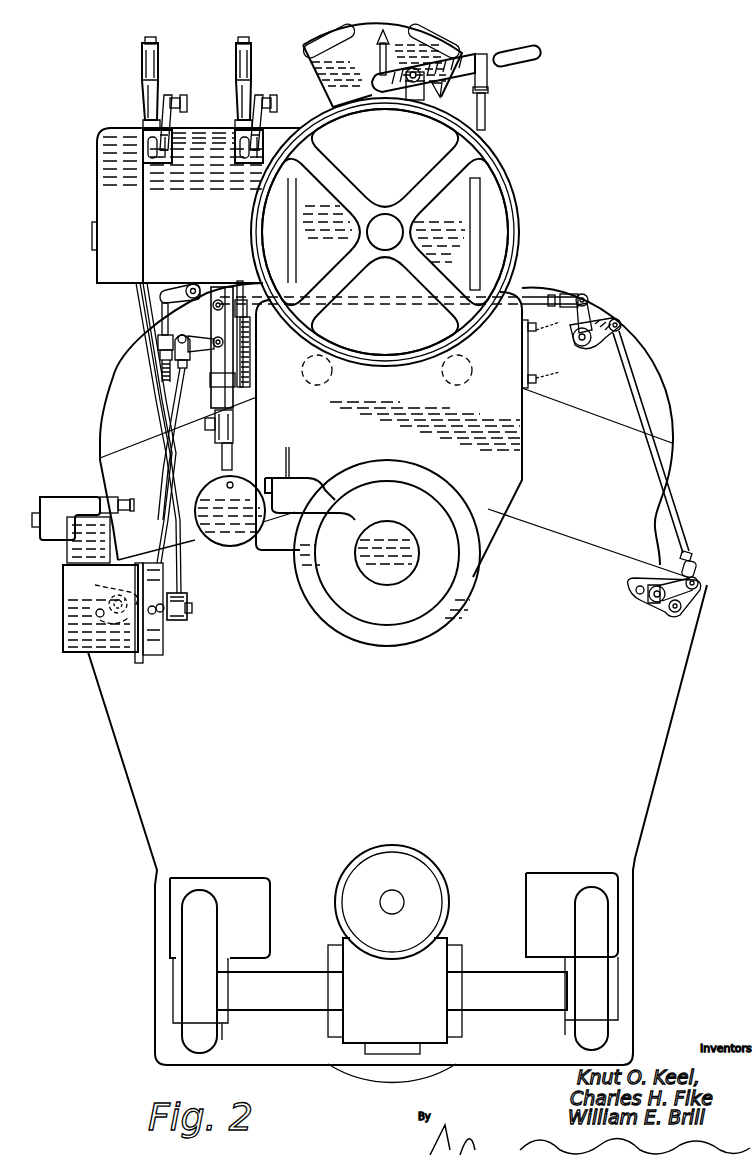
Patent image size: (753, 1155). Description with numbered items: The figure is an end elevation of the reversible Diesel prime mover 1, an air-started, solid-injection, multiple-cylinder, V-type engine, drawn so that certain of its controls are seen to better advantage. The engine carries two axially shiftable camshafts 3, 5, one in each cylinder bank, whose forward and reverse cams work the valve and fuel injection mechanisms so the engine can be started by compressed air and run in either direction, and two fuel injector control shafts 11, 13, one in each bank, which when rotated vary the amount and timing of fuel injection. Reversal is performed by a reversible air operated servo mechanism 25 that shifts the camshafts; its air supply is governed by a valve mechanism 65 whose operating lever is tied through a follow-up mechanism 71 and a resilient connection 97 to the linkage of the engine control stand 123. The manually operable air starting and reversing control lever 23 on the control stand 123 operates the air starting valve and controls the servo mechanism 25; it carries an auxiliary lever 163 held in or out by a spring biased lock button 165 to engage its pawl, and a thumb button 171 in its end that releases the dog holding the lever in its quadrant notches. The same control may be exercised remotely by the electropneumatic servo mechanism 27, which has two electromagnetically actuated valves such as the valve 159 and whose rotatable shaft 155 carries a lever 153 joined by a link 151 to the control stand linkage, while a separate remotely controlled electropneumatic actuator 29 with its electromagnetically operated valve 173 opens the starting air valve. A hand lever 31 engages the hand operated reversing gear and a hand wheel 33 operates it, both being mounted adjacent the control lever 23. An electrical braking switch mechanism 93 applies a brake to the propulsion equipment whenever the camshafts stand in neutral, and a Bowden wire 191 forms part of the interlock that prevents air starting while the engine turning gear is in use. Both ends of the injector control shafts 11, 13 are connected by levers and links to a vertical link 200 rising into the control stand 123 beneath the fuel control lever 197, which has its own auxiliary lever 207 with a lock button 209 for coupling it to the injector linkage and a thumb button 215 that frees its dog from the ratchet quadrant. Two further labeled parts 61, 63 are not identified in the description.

The prime mover 1 is at (658, 702).
The camshaft 3 is at (467, 375).
The camshaft 5 is at (310, 377).
The fuel injector control shaft 11 is at (112, 600).
The fuel injector control shaft 13 is at (680, 614).
The air starting and reversing control lever 23 is at (145, 85).
The reversible air operated servo mechanism 25 is at (329, 630).
The remotely controlled electropneumatic servo mechanism 27 is at (56, 604).
The remotely controlled electropneumatic actuator 29 is at (319, 468).
The hand lever 31 is at (527, 48).
The hand wheel 33 is at (497, 180).
The pointer 61 is at (381, 58).
The indicator plate 63 is at (320, 62).
The valve mechanism 65 is at (214, 491).
The follow-up mechanism 71 is at (209, 416).
The electrical braking switch 93 is at (214, 457).
The resilient connection 97 is at (215, 352).
The engine control stand 123 is at (118, 148).
The link 151 is at (145, 308).
The lever 153 is at (182, 595).
The rotatable shaft 155 is at (163, 613).
The electromagnetically actuated valve 159 is at (48, 528).
The auxiliary lever 163 is at (172, 123).
The lock button 165 is at (184, 95).
The thumb button 171 is at (145, 41).
The electromagnetically operated valve 173 is at (268, 478).
The Bowden wire 191 is at (157, 339).
The fuel control lever 197 is at (238, 57).
The vertical link 200 is at (257, 277).
The auxiliary lever 207 is at (263, 118).
The lock button 209 is at (276, 98).
The thumb button 215 is at (243, 42).